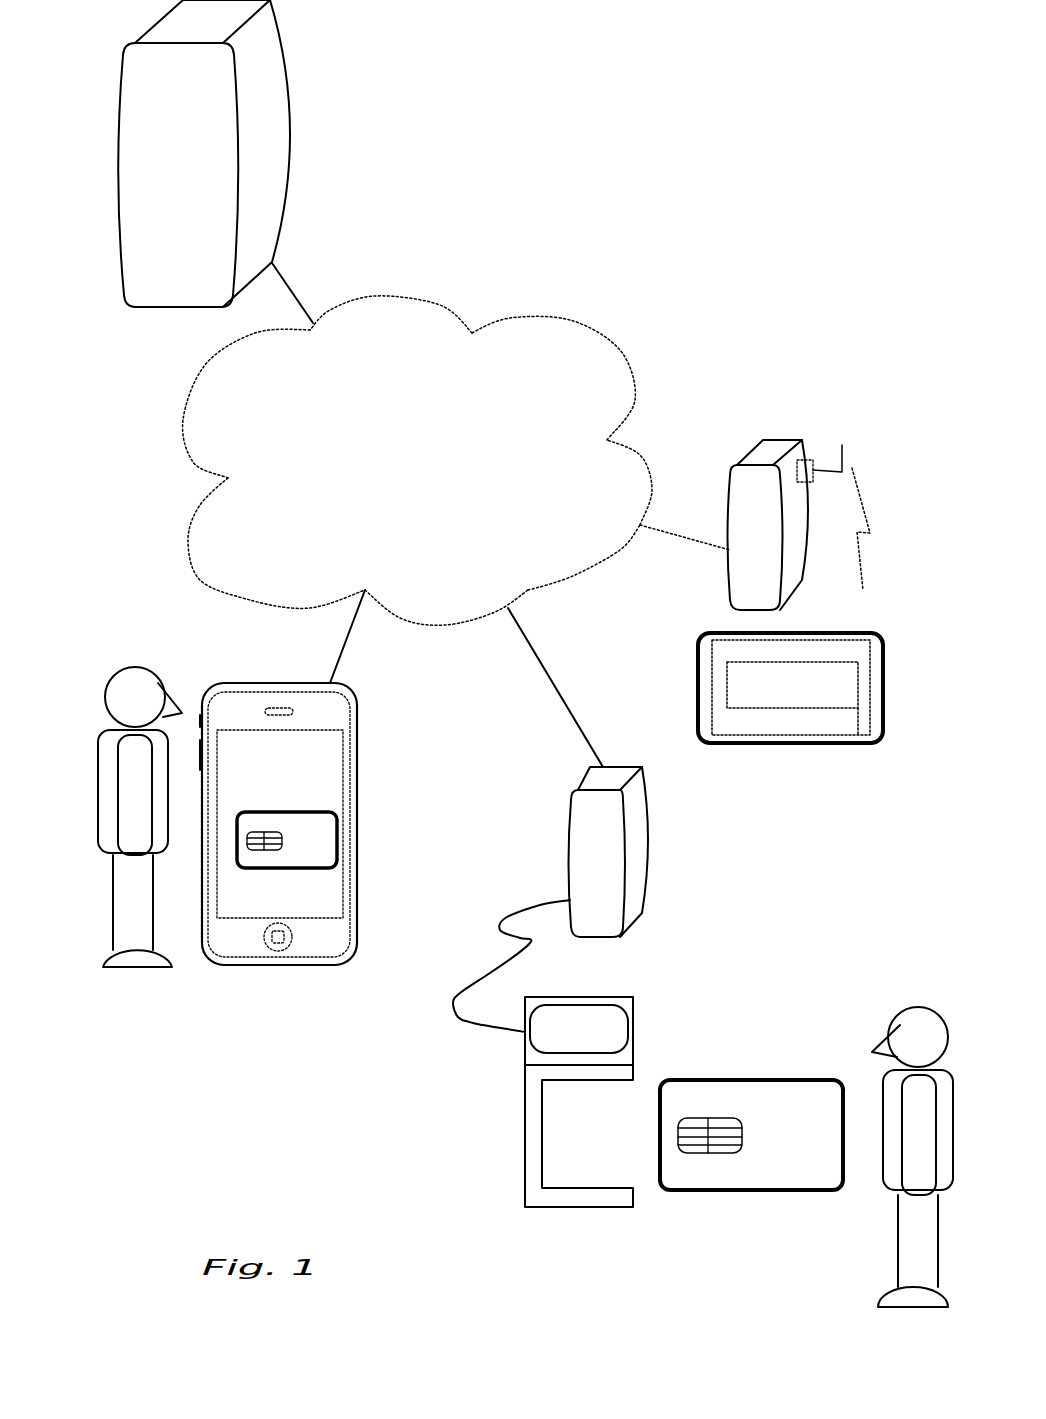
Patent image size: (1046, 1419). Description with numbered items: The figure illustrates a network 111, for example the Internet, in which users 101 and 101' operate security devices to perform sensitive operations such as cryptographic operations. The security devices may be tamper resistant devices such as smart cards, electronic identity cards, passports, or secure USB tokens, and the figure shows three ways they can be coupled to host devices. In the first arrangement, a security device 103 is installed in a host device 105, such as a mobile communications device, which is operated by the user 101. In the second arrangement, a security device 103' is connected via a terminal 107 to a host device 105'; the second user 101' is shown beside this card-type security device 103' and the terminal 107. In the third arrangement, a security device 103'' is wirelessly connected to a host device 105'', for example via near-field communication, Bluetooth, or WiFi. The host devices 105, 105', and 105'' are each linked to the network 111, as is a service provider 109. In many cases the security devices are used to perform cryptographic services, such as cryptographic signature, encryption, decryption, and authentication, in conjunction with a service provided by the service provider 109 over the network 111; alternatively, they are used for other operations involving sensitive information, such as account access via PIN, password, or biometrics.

The user 101 is at (115, 852).
The user 101' is at (885, 1191).
The security device 103 is at (345, 840).
The security device 103' is at (751, 1178).
The security device 103'' is at (790, 728).
The host device 105 is at (336, 824).
The host device 105' is at (667, 852).
The host device 105'' is at (799, 483).
The terminal 107 is at (628, 1020).
The service provider 109 is at (255, 153).
The network 111 is at (571, 490).